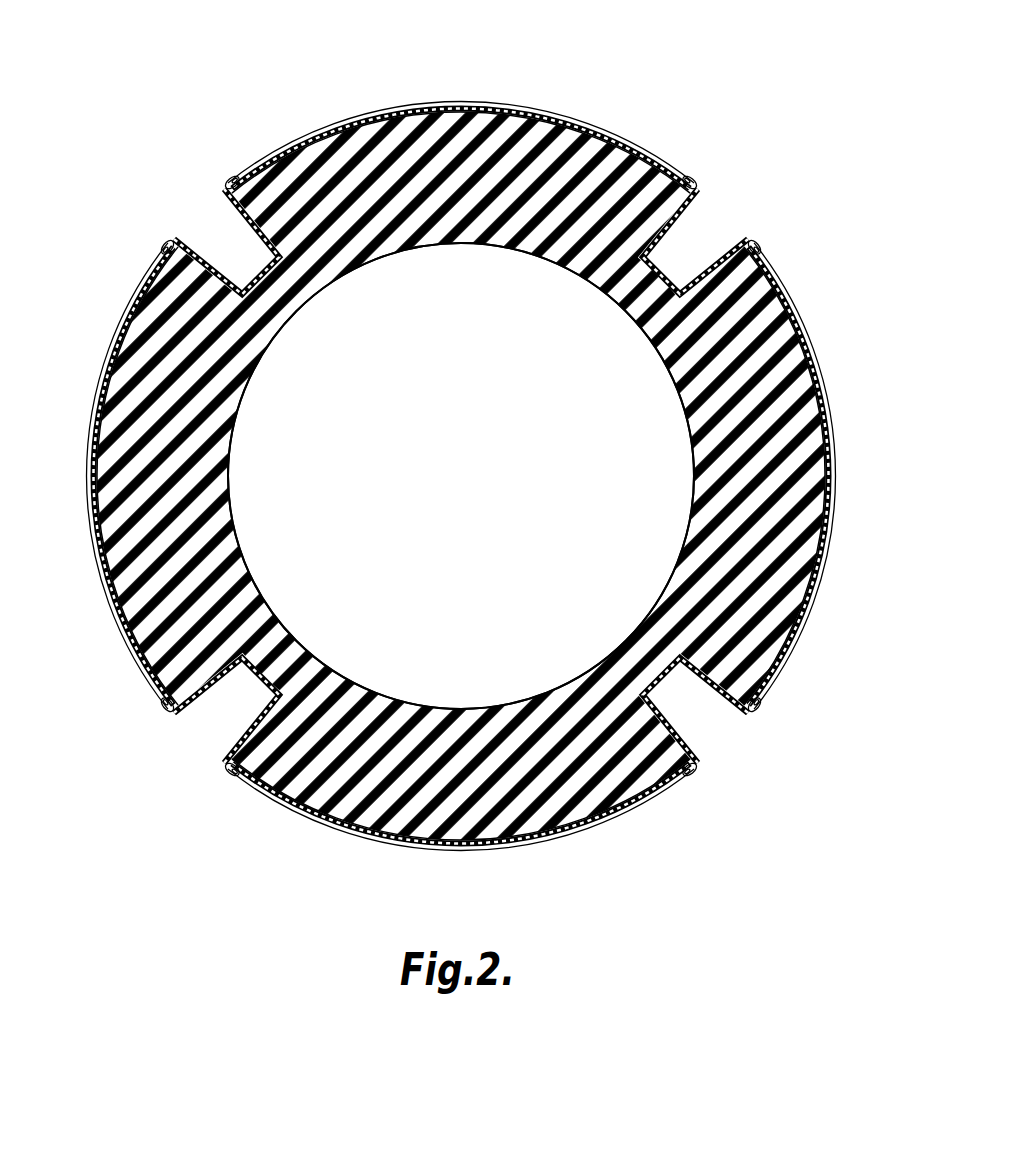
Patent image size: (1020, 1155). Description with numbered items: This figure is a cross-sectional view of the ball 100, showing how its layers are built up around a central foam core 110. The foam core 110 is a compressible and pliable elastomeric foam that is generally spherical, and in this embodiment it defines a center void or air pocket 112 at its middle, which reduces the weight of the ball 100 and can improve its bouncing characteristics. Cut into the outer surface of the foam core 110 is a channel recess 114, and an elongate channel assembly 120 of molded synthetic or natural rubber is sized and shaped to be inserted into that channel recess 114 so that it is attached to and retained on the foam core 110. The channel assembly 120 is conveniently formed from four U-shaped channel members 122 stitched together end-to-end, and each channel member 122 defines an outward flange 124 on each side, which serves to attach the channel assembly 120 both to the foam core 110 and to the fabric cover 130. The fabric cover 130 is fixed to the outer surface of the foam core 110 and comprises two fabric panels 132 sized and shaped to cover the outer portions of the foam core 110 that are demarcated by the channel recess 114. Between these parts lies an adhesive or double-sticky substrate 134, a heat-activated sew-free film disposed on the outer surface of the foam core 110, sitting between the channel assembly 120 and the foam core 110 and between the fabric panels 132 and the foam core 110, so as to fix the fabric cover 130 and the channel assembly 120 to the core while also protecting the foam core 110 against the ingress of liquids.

The ball 100 is at (737, 107).
The foam core 110 is at (697, 457).
The center void or air pocket 112 is at (474, 490).
The channel recess 114 is at (646, 300).
The channel assembly 120 is at (238, 223).
The U-shaped channel members 122 is at (210, 695).
The outward flange 124 is at (168, 246).
The fabric cover 130 is at (591, 120).
The fabric panels 132 is at (643, 148).
The adhesive or double-sticky substrate 134 is at (443, 116).